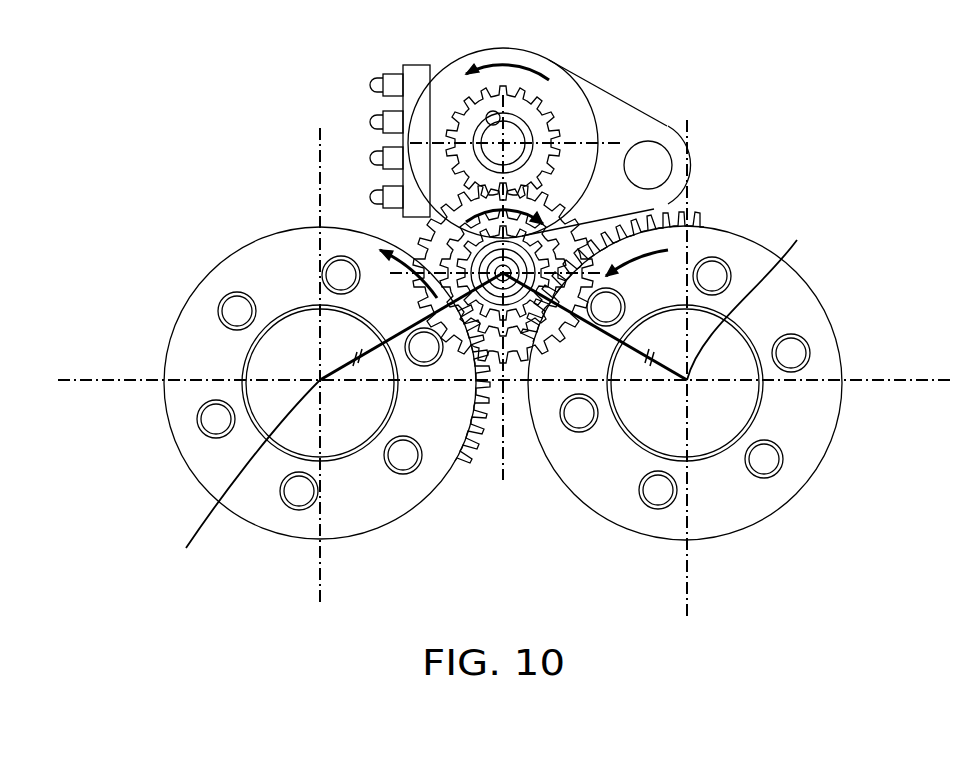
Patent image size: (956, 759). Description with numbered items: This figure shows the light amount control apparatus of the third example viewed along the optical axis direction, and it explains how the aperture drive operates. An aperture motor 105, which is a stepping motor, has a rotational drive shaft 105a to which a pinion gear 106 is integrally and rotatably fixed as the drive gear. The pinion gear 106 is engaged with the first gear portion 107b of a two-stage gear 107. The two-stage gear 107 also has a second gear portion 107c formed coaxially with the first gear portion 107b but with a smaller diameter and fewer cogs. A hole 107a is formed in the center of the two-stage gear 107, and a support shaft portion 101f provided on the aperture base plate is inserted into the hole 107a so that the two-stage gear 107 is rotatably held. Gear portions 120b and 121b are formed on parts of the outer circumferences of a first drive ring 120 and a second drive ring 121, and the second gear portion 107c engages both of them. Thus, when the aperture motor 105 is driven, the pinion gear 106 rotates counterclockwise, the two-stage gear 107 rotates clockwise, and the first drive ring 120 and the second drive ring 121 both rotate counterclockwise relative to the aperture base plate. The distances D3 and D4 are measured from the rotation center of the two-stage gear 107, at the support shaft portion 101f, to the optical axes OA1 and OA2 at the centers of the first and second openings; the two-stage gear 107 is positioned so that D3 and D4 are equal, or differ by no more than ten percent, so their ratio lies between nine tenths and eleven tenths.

The aperture motor 105 is at (467, 57).
The rotational drive shaft 105a is at (522, 141).
The pinion gear 106 is at (537, 113).
The two-stage gear 107 is at (326, 191).
The hole 107a is at (497, 270).
The first gear portion 107b is at (462, 258).
The second gear portion 107c is at (470, 268).
The support shaft portion 101f is at (507, 282).
The first drive ring 120 is at (207, 280).
The gear portion 120b is at (477, 452).
The second drive ring 121 is at (826, 318).
The gear portion 121b is at (692, 214).
The distance D3 is at (411, 315).
The distance D4 is at (595, 315).
The optical axis OA1 is at (248, 475).
The optical axis OA2 is at (753, 296).